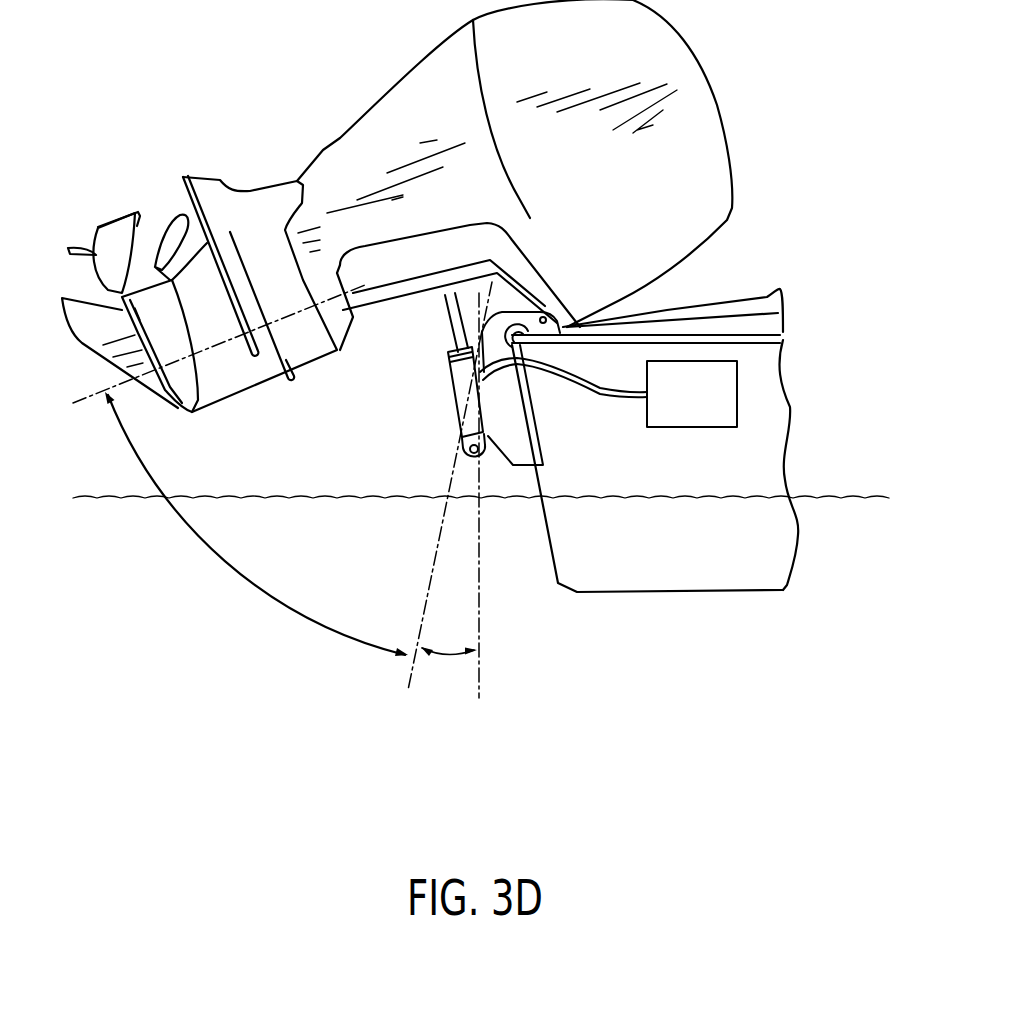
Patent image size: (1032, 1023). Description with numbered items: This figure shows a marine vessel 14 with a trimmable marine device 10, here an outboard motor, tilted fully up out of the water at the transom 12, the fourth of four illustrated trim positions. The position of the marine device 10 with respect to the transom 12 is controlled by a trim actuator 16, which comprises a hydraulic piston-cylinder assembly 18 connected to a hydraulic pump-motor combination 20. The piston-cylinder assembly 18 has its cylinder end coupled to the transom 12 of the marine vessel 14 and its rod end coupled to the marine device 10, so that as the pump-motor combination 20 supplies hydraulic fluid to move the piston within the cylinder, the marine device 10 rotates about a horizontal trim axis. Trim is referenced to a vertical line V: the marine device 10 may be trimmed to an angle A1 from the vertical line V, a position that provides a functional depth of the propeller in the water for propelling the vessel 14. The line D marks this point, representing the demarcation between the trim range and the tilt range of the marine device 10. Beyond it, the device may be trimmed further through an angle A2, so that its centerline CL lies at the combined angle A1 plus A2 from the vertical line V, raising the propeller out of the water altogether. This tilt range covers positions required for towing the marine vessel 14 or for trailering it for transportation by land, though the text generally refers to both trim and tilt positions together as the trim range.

The trimmable marine device 10 is at (718, 105).
The transom 12 is at (683, 466).
The marine vessel 14 is at (770, 413).
The trim actuator 16 is at (633, 425).
The hydraulic piston-cylinder assembly 18 is at (450, 370).
The hydraulic pump-motor combination 20 is at (705, 407).
The centerline CL is at (96, 403).
The line D is at (427, 597).
The vertical line V is at (478, 682).
The angle A1 is at (447, 655).
The angle A2 is at (227, 563).